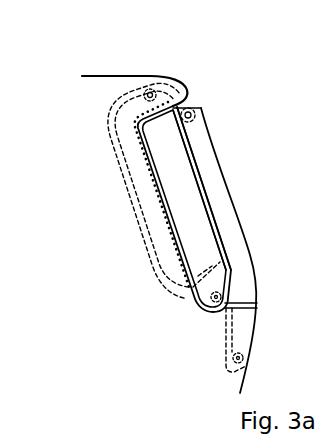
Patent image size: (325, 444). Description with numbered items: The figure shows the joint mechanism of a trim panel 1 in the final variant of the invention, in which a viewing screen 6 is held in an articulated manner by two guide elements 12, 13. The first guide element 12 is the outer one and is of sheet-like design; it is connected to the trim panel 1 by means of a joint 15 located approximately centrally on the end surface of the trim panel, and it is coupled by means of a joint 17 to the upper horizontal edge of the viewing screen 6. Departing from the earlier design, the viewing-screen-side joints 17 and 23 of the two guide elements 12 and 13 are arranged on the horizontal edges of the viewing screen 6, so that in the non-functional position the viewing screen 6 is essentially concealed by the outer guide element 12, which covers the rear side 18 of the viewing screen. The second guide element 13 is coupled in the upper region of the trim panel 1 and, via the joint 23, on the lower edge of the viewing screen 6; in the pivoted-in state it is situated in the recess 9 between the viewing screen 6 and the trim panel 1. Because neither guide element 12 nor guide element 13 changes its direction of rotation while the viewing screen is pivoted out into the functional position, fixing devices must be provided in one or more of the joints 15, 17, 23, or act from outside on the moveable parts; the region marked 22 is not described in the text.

The trim panel 1 is at (111, 88).
The joint 15 is at (150, 90).
The joint 17 is at (197, 108).
The viewing screen 6 is at (177, 163).
The first guide element 12 is at (228, 198).
The rear side of the viewing screen 18 is at (217, 241).
The recess 9 is at (121, 149).
The second guide element 13 is at (152, 219).
The joint 23 is at (215, 305).
The fastening element 22 is at (246, 347).